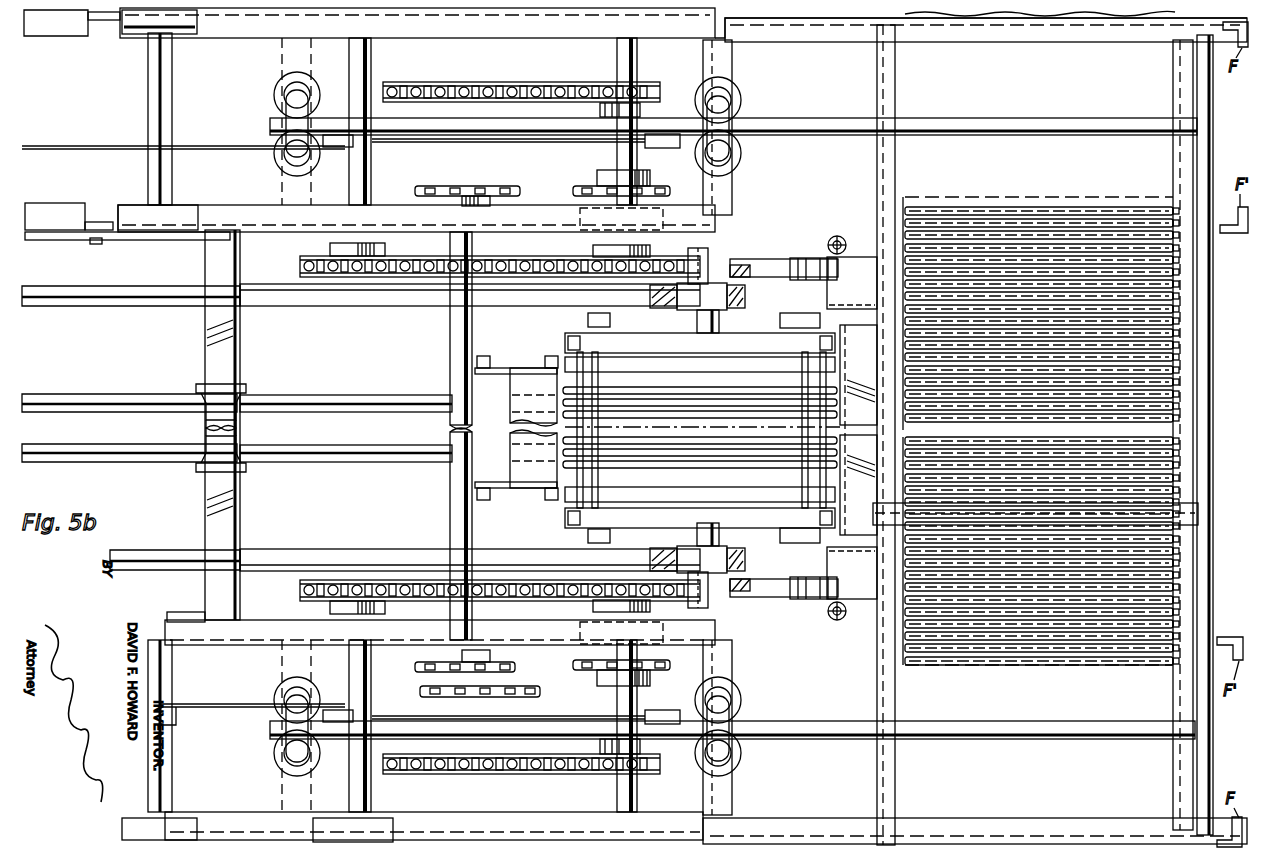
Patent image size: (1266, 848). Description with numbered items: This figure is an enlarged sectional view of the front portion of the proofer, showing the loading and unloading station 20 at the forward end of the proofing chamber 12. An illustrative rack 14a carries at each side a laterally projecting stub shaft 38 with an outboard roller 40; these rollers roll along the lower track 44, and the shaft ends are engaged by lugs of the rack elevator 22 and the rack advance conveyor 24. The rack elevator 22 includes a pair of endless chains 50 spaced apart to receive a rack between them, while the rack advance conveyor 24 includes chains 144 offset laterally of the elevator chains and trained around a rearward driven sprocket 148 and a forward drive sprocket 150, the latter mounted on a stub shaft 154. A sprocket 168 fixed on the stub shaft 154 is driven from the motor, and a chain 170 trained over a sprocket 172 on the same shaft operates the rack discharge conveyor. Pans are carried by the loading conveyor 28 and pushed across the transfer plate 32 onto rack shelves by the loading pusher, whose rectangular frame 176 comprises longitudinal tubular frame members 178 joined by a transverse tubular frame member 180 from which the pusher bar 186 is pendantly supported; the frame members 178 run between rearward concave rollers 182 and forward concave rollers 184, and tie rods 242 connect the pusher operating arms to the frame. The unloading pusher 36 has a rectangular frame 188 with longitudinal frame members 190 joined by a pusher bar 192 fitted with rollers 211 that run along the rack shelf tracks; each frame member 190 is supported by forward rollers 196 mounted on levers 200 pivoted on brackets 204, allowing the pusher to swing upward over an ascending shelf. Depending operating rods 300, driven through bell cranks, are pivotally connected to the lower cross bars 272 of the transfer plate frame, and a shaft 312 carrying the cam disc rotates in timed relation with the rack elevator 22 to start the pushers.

The proofing chamber 12 is at (310, 350).
The rack 14a is at (565, 336).
The loading and unloading station 20 is at (1028, 175).
The rack elevator 22 is at (765, 256).
The rack advance conveyor 24 is at (300, 263).
The loading conveyor 28 is at (1042, 314).
The transfer plate 32 is at (856, 378).
The unloading pusher 36 is at (520, 482).
The stub shaft 38 is at (708, 258).
The outboard roller 40 is at (697, 302).
The lower track 44 is at (157, 308).
The endless chain 50 is at (810, 257).
The endless chain 144 is at (405, 280).
The rearward driven sprocket 148 is at (386, 250).
The forward drive sprocket 150 is at (593, 250).
The stub shaft 154 is at (616, 154).
The sprocket 168 is at (657, 186).
The chain 170 is at (462, 83).
The sprocket 172 is at (638, 112).
The rectangular frame 176 is at (791, 117).
The tubular frame member 178 is at (947, 118).
The tubular frame member 180 is at (1210, 378).
The rearward concave roller 182 is at (275, 94).
The forward concave roller 184 is at (742, 158).
The pusher bar 186 is at (1042, 551).
The rectangular frame 188 is at (375, 394).
The frame member 190 is at (140, 393).
The pusher bar 192 is at (528, 385).
The forward roller 196 is at (245, 402).
The lever 200 is at (195, 233).
The bracket 204 is at (94, 236).
The roller 211 is at (484, 355).
The tie rod 242 is at (465, 185).
The lower cross bar 272 is at (827, 288).
The operating rod 300 is at (832, 236).
The shaft 312 is at (843, 236).